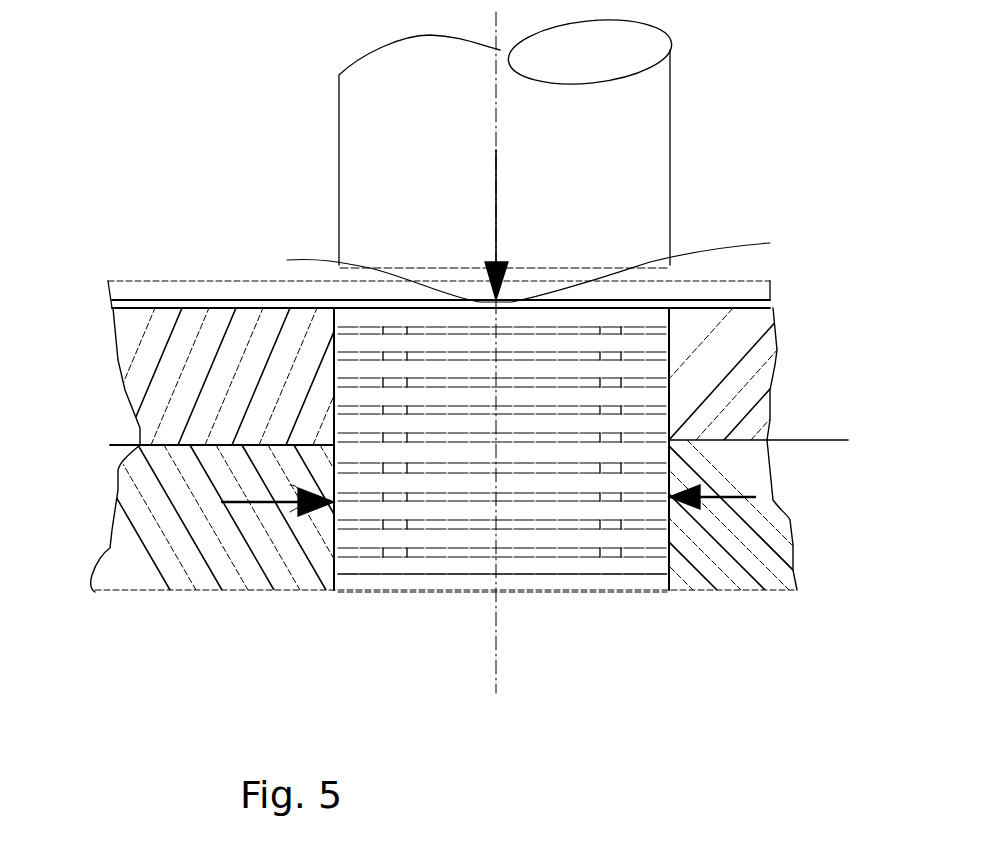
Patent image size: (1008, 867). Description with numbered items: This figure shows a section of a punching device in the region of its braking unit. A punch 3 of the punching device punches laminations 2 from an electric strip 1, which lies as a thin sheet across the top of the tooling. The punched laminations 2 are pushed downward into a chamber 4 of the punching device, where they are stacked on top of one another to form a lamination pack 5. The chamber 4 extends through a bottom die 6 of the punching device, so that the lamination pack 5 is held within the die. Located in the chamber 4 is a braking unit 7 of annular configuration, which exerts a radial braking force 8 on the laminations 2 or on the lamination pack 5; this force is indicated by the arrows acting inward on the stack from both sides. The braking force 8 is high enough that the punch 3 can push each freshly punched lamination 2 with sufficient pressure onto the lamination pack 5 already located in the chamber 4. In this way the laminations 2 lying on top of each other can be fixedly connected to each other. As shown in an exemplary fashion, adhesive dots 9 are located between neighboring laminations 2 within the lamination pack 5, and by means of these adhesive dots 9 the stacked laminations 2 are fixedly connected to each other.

The electric strip 1 is at (150, 289).
The lamination 2 is at (655, 352).
The punch 3 is at (645, 165).
The chamber 4 is at (669, 393).
The lamination pack 5 is at (463, 578).
The bottom die 6 is at (165, 371).
The braking unit 7 is at (130, 567).
The radial braking force 8 is at (732, 498).
The adhesive dots 9 is at (385, 358).